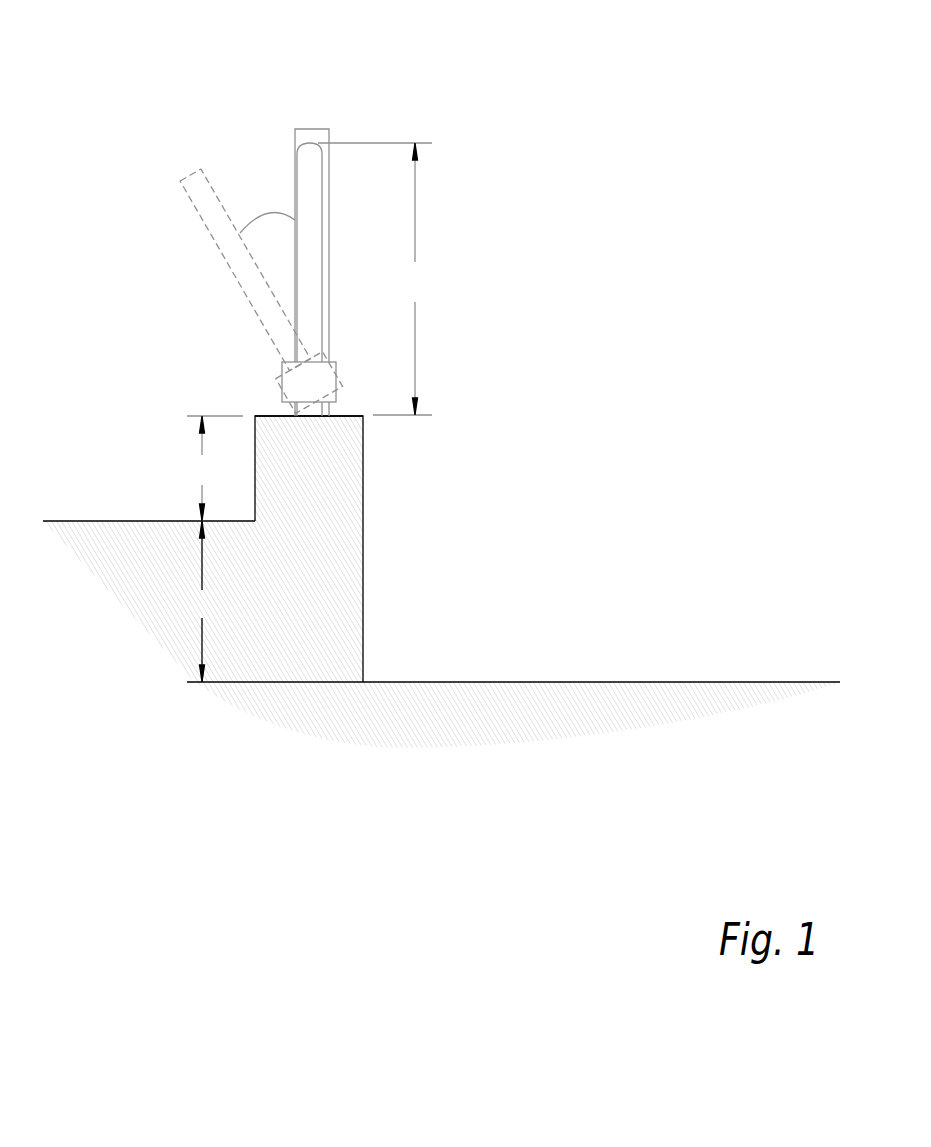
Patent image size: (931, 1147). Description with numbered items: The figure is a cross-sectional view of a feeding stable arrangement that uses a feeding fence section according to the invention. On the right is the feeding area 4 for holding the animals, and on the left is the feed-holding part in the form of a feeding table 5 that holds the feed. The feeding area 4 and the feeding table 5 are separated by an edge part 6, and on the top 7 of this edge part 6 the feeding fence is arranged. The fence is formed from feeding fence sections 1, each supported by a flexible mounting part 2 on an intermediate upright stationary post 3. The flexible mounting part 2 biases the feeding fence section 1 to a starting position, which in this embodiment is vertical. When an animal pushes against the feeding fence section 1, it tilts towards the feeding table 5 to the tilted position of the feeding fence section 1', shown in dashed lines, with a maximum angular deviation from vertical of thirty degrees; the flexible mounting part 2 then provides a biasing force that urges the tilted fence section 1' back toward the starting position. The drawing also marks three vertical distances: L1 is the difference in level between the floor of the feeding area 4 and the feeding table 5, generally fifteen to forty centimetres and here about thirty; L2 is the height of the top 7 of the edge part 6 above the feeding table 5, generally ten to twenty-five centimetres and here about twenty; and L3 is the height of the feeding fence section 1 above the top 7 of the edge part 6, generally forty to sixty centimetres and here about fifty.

The feeding fence section 1 is at (296, 217).
The feeding fence section in tilted position 1' is at (242, 238).
The flexible mounting part 2 is at (337, 394).
The upright stationary post 3 is at (318, 137).
The feeding area 4 is at (628, 681).
The feeding table 5 is at (123, 521).
The edge part 6 is at (337, 452).
The top of edge part 7 is at (268, 412).
The vertical distance between level of floor in feeding area and level of feeding ta L1 is at (203, 601).
The vertical distance between level of feeding table and level of top of edge part L2 is at (215, 468).
The vertical distance between level of top of edge part and top of feeding fence sec L3 is at (375, 279).